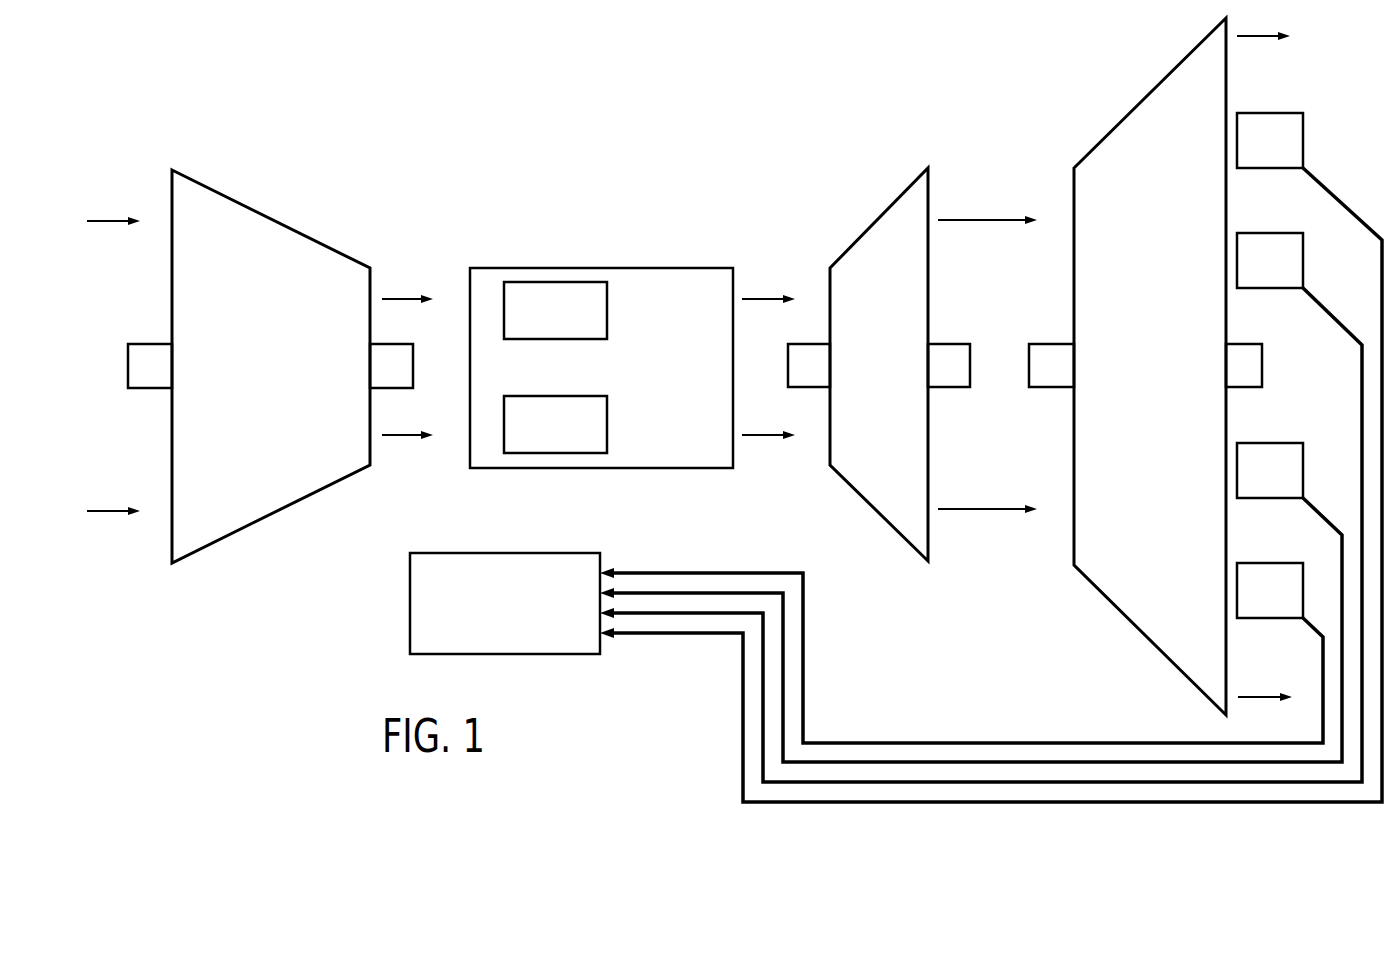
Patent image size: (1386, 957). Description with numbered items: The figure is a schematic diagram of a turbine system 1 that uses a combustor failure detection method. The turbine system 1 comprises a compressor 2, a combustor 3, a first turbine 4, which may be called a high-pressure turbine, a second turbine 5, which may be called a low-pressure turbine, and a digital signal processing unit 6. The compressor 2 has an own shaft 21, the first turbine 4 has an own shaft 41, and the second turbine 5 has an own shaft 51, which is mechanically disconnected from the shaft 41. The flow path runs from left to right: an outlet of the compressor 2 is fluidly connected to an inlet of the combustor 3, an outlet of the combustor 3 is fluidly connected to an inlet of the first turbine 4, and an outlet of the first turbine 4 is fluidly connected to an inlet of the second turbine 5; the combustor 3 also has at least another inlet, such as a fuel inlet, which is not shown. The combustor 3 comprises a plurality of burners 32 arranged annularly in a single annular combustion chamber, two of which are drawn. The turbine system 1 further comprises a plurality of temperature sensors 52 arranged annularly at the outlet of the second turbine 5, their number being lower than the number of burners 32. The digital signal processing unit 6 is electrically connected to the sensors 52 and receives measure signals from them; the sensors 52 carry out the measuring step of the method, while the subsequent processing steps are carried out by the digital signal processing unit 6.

The turbine system 1 is at (470, 184).
The compressor 2 is at (277, 221).
The shaft 21 is at (150, 390).
The combustor 3 is at (585, 268).
The burners 32 is at (607, 313).
The first turbine 4 is at (873, 222).
The shaft 41 is at (948, 387).
The second turbine 5 is at (1143, 100).
The shaft 51 is at (1052, 343).
The temperature sensors 52 is at (1303, 143).
The digital signal processing unit 6 is at (510, 553).